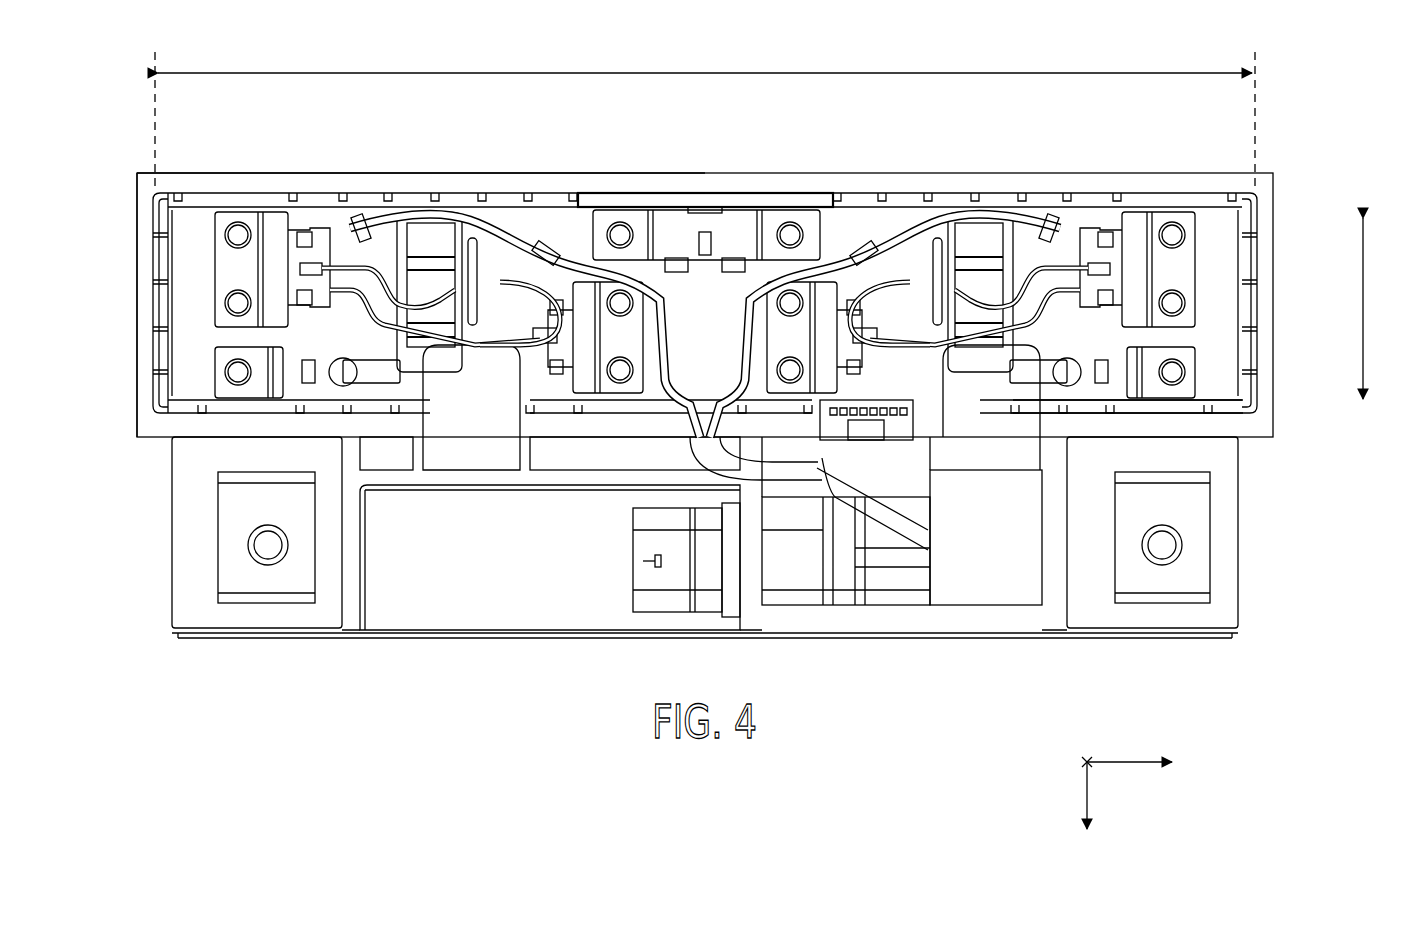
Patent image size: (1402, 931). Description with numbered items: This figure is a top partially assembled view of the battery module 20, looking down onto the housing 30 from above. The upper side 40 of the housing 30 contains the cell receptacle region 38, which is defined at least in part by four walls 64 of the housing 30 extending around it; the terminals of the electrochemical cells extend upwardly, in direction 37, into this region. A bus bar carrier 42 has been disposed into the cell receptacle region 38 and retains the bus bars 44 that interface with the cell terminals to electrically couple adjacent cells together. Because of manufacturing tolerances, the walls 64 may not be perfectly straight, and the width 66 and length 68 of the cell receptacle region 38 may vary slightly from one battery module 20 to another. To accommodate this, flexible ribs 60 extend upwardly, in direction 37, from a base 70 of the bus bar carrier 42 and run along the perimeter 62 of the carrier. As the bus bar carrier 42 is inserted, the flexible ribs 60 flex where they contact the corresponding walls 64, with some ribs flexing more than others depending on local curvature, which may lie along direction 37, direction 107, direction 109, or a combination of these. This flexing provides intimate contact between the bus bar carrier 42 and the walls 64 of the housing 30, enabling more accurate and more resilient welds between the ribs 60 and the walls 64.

The battery module 20 is at (945, 120).
The housing 30 is at (135, 243).
The direction 37 is at (1087, 762).
The cell receptacle region 38 is at (182, 222).
The upper side 40 is at (145, 185).
The bus bar carrier 42 is at (203, 227).
The bus bars 44 is at (238, 262).
The flexible ribs 60 is at (378, 193).
The perimeter 62 is at (740, 190).
The walls 64 is at (665, 193).
The width 66 is at (1365, 305).
The length 68 is at (705, 73).
The base 70 is at (540, 230).
The direction 107 is at (1123, 762).
The direction 109 is at (1087, 790).